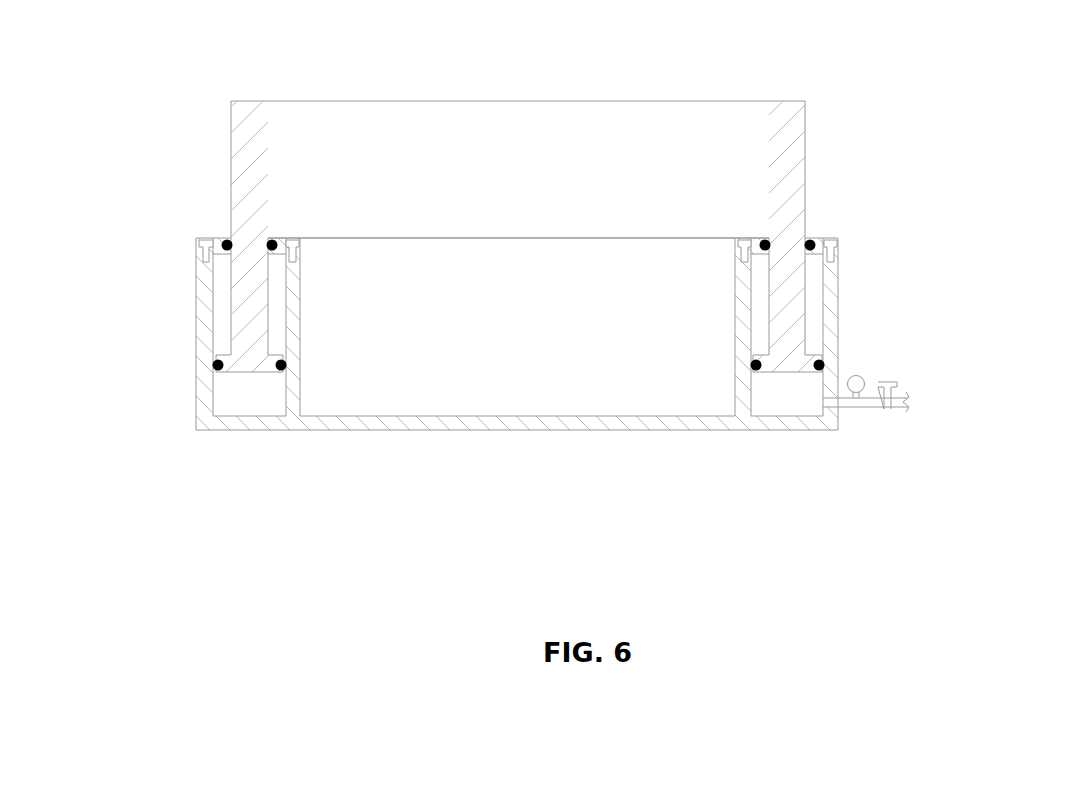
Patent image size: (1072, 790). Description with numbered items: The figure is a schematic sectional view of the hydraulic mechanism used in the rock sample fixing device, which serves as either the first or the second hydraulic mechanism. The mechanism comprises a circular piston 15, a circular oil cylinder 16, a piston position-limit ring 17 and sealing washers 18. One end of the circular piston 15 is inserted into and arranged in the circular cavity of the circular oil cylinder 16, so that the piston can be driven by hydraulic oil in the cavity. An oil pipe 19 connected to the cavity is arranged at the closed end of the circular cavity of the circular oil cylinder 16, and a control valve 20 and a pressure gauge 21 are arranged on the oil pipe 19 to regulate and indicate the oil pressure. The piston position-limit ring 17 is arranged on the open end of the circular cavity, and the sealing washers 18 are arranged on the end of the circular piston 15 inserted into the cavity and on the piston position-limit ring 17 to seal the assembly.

The circular piston 15 is at (795, 141).
The circular oil cylinder 16 is at (833, 283).
The piston position-limit ring 17 is at (273, 242).
The sealing washer 18 is at (281, 365).
The oil pipe 19 is at (852, 402).
The control valve 20 is at (895, 382).
The pressure gauge 21 is at (862, 378).